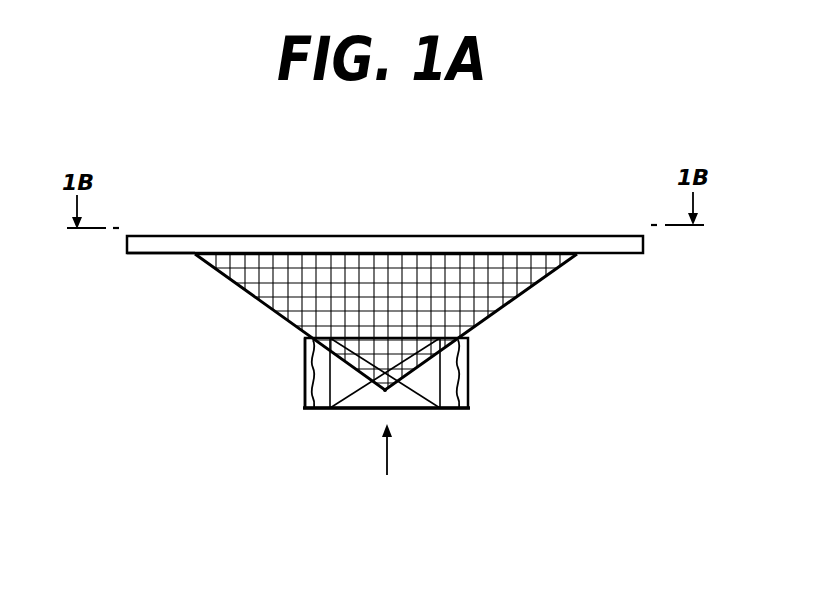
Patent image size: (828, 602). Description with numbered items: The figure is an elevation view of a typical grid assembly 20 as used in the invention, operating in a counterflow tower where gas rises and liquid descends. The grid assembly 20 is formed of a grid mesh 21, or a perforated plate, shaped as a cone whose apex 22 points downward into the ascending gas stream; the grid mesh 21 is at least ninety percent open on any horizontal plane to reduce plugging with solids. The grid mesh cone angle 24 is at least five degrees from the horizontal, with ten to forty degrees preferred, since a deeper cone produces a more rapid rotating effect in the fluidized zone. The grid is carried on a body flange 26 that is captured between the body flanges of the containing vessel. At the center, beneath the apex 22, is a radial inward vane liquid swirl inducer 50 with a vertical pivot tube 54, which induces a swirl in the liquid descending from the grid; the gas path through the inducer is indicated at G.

The grid assembly 20 is at (262, 186).
The grid mesh cone angle 24 is at (557, 182).
The body flange 26 is at (143, 250).
The grid mesh 21 is at (568, 276).
The apex 22 is at (385, 397).
The radial inward vane liquid swirl inducer 50 is at (478, 396).
The vertical pivot tube 54 is at (305, 375).
The gap G is at (388, 458).